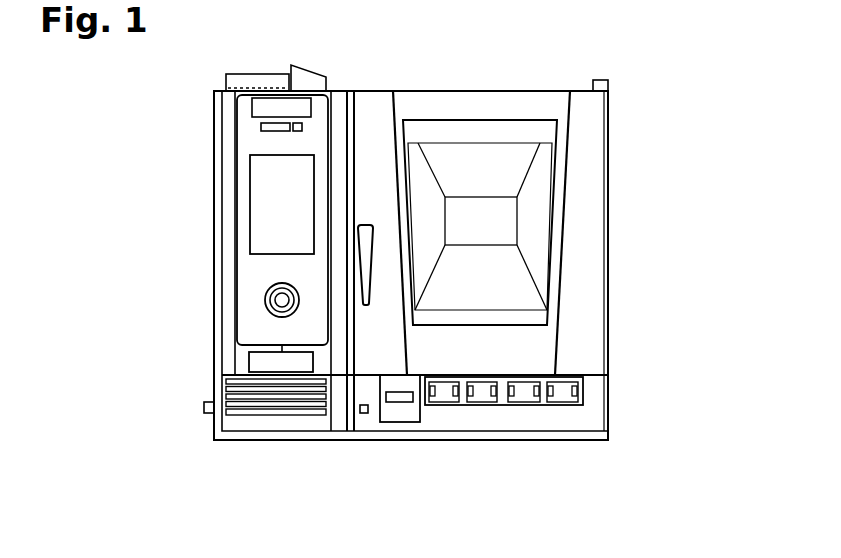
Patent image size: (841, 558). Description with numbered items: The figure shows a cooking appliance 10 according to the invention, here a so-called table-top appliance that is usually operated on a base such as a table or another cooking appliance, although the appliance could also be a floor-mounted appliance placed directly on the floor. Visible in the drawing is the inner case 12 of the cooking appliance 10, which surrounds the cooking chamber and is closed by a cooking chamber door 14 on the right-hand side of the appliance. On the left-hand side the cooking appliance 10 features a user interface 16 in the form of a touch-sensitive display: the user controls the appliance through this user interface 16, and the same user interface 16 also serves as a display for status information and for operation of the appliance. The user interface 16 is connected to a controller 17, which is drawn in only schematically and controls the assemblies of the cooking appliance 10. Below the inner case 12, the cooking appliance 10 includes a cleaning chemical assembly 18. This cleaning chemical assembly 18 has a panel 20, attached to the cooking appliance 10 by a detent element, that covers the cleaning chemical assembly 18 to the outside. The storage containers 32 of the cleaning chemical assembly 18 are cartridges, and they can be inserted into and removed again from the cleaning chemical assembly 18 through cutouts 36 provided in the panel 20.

The cooking appliance 10 is at (158, 126).
The inner case 12 is at (510, 146).
The cooking chamber door 14 is at (593, 227).
The user interface 16 is at (260, 220).
The controller 17 is at (262, 362).
The cleaning chemical assembly 18 is at (634, 388).
The panel 20 is at (370, 420).
The storage containers 32 is at (480, 395).
The cutouts 36 is at (565, 418).